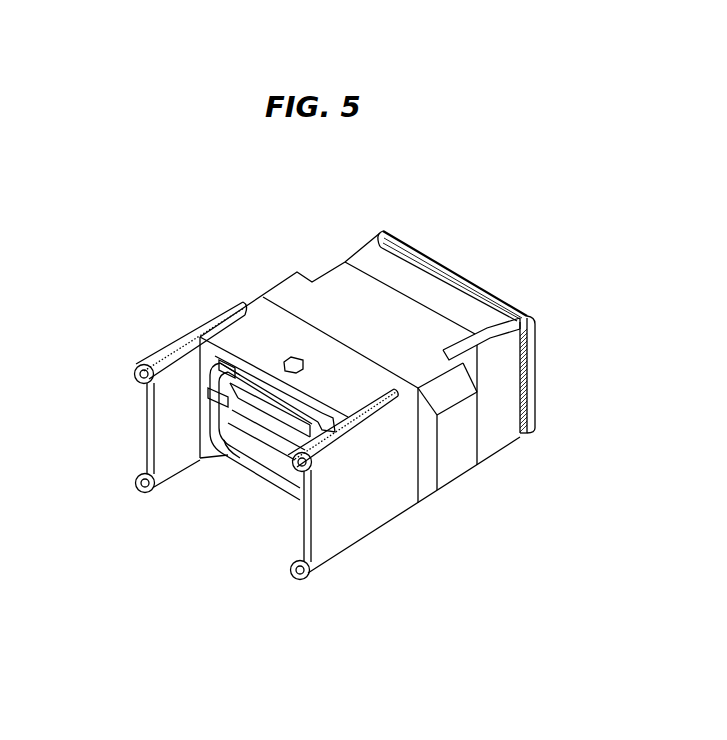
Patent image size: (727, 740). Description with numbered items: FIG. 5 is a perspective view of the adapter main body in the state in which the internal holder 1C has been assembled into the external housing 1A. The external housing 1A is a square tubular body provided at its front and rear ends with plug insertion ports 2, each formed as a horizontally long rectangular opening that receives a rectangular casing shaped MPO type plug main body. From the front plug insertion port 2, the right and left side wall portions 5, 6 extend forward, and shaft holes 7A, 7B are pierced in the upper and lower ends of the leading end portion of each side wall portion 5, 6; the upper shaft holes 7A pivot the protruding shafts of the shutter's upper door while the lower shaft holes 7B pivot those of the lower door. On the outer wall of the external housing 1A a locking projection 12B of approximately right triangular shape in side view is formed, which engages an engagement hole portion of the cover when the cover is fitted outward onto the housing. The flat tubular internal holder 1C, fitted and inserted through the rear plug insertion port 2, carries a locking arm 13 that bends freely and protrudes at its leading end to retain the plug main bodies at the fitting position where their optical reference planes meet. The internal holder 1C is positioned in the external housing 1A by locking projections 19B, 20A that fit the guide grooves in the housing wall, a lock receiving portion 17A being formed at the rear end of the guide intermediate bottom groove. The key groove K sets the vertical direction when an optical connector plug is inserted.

The external housing 1A is at (324, 252).
The internal holder 1C is at (252, 478).
The plug insertion port 2 is at (538, 383).
The right side wall portion 5 is at (350, 523).
The left side wall portion 6 is at (173, 360).
The upper shaft hole 7A is at (135, 377).
The lower shaft hole 7B is at (136, 488).
The locking projection 12B is at (294, 357).
The locking arm 13 is at (200, 428).
The lock receiving portion 17A is at (238, 472).
The locking projection 19B is at (272, 453).
The locking projection 20A is at (318, 400).
The key groove K is at (239, 362).